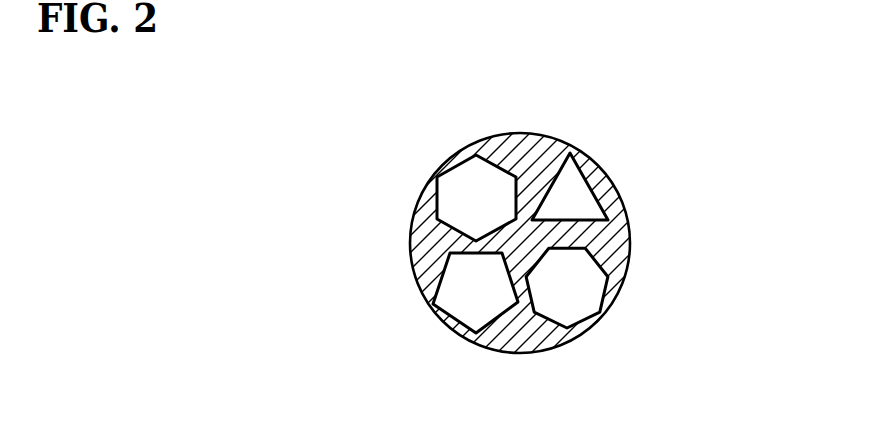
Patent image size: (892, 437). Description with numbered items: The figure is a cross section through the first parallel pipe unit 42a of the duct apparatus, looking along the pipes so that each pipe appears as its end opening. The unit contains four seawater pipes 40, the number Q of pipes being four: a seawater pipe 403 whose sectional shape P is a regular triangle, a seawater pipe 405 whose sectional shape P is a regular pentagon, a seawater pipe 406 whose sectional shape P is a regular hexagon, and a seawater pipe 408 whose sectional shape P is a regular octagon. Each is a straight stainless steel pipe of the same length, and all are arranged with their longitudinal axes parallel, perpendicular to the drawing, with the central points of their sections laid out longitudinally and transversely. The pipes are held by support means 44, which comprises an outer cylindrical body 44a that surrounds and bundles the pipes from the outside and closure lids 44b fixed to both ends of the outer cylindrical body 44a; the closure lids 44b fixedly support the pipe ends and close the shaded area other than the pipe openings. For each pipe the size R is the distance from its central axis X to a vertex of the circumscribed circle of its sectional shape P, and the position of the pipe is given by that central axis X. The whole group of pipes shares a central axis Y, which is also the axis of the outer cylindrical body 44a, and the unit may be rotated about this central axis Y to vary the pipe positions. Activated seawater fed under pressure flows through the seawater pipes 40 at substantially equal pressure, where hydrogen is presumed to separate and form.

The first parallel pipe unit 42a is at (700, 137).
The support means 44 is at (712, 162).
The outer cylindrical body 44a is at (614, 185).
The closure lids 44b is at (600, 242).
The seawater pipes 40 is at (560, 239).
The seawater pipe 406 is at (443, 170).
The seawater pipe 403 is at (600, 178).
The seawater pipe 405 is at (450, 320).
The seawater pipe 408 is at (588, 335).
The sectional shape P is at (490, 162).
The central axis X is at (570, 202).
The size R is at (438, 219).
The central axis Y is at (513, 246).
The number of pipes Q is at (690, 268).